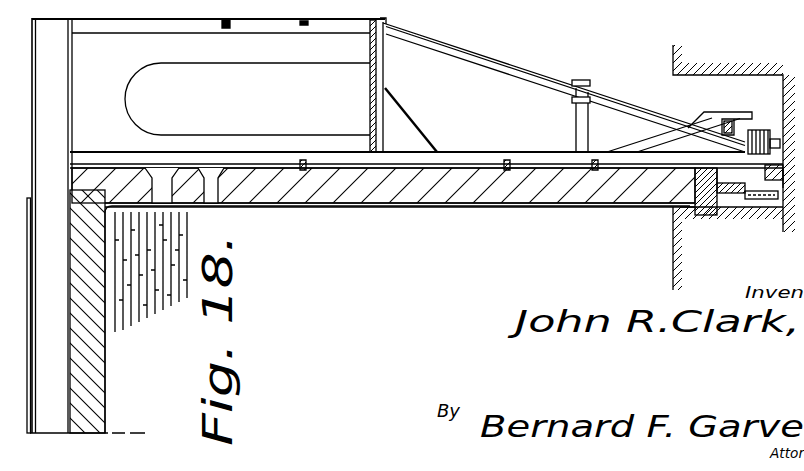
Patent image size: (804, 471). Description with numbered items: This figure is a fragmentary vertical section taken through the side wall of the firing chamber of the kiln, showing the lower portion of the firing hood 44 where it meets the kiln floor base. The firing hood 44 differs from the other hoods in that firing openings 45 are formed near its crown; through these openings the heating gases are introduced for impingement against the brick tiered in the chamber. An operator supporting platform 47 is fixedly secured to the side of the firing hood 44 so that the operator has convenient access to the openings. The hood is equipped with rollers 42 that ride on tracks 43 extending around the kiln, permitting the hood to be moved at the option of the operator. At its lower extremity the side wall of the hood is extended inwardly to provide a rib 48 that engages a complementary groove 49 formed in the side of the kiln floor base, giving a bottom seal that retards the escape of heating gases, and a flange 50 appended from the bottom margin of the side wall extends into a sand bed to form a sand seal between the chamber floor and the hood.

The rollers 42 is at (751, 128).
The tracks 43 is at (765, 139).
The firing hood 44 is at (120, 165).
The firing openings 45 is at (160, 190).
The operator supporting platform 47 is at (372, 100).
The rib 48 is at (707, 216).
The groove 49 is at (718, 210).
The flange 50 is at (748, 200).